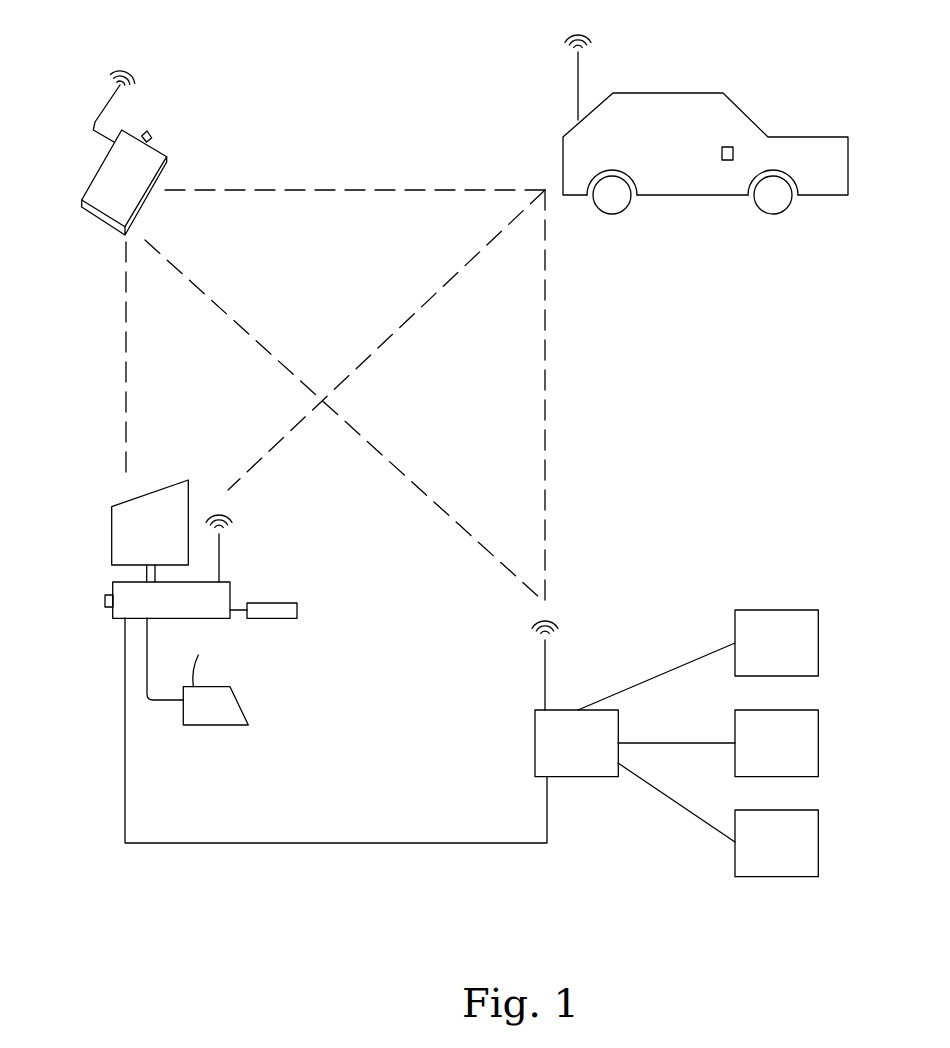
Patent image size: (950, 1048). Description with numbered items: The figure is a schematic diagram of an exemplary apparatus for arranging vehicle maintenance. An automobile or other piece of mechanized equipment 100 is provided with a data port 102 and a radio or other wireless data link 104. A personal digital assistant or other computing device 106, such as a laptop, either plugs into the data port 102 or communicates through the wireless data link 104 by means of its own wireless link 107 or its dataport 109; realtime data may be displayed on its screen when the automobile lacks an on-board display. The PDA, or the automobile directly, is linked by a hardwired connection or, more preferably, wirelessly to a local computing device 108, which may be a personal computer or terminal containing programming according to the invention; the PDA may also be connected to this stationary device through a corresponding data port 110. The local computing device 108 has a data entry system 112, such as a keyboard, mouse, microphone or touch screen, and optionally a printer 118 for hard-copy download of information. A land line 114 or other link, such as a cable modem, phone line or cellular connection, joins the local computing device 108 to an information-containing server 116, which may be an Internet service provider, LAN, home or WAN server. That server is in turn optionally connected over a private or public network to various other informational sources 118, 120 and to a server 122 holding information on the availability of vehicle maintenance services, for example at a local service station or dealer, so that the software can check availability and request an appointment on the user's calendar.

The automobile or other piece of mechanized equipment 100 is at (670, 190).
The data port 102 is at (725, 162).
The wireless data link 104 is at (577, 80).
The personal digital assistant or other computing device 106 is at (145, 202).
The wireless link 107 is at (93, 125).
The dataport 109 is at (152, 136).
The local computing device 108 is at (130, 587).
The data port 110 is at (103, 602).
The data entry system 112 is at (282, 607).
The land line 114 is at (148, 845).
The information-containing server 116 is at (560, 772).
The printer / informational source 118 is at (230, 705).
The informational source 120 is at (805, 771).
The server 122 is at (800, 877).